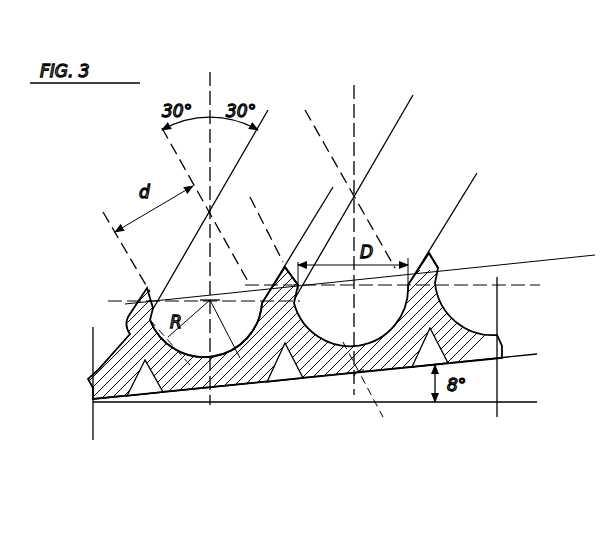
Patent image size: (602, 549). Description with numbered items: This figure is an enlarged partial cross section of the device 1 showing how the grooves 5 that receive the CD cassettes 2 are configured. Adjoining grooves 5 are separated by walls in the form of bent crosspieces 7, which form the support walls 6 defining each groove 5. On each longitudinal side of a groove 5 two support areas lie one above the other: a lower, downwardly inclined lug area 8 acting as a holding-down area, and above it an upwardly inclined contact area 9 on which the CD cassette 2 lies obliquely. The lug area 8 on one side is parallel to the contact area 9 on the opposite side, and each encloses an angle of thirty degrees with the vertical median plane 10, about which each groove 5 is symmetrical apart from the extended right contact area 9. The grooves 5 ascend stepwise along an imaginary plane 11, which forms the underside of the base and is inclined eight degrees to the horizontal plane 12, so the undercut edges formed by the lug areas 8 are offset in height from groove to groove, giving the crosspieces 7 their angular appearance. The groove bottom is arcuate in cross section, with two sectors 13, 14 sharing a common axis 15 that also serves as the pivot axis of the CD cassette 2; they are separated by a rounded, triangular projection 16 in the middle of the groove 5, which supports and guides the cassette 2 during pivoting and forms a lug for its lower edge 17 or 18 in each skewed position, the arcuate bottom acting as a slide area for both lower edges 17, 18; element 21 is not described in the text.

The device 1 is at (100, 300).
The CD cassette 2 is at (123, 250).
The groove 5 is at (397, 238).
The support wall 6 is at (446, 262).
The crosspiece 7 is at (287, 262).
The lug area 8 is at (133, 337).
The contact area 9 is at (148, 288).
The median plane 10 is at (213, 84).
The imaginary plane 11 is at (522, 355).
The horizontal plane 12 is at (511, 403).
The sector 13 is at (162, 391).
The sector 14 is at (247, 369).
The axis 15 is at (207, 299).
The projection 16 is at (208, 369).
The lower edge 17 is at (345, 346).
The lower edge 18 is at (350, 347).
The transition surface 21 is at (288, 379).